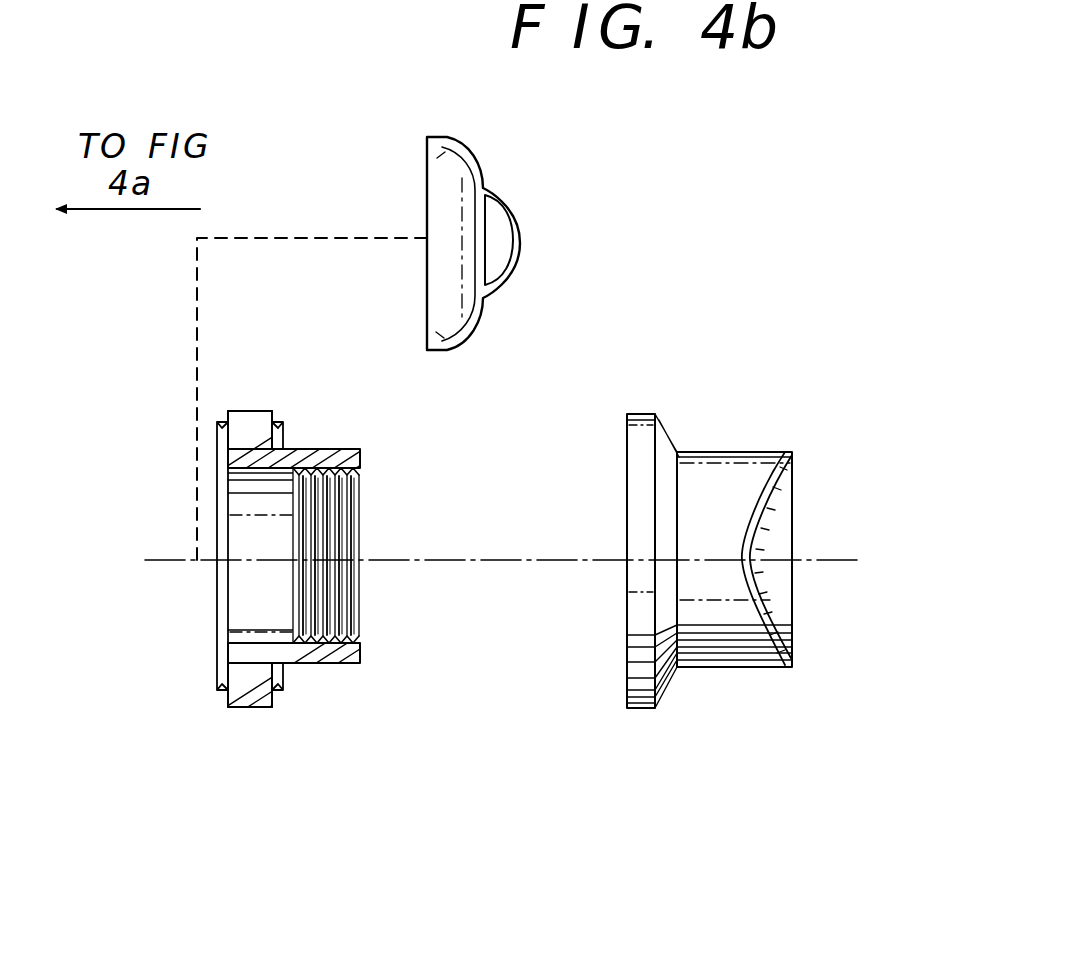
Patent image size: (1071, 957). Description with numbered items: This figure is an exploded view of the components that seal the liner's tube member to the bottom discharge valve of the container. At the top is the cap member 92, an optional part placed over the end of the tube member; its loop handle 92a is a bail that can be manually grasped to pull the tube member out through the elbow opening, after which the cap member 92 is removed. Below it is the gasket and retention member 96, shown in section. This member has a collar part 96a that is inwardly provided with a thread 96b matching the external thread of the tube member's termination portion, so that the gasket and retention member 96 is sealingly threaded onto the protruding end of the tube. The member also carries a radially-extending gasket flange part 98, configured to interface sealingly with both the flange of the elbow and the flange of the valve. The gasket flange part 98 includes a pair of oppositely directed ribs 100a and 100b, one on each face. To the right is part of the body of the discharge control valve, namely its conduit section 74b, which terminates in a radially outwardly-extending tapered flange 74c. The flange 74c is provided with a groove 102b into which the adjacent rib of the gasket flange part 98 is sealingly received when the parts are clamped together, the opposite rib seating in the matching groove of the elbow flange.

The cap member 92 is at (447, 138).
The loop handle 92a is at (518, 229).
The gasket and retention member 96 is at (308, 565).
The collar part 96a is at (322, 452).
The thread 96b is at (330, 470).
The gasket flange part 98 is at (253, 411).
The rib 100a is at (215, 690).
The rib 100b is at (283, 683).
The conduit section 74b is at (728, 450).
The flange 74c is at (648, 435).
The groove 102b is at (668, 551).